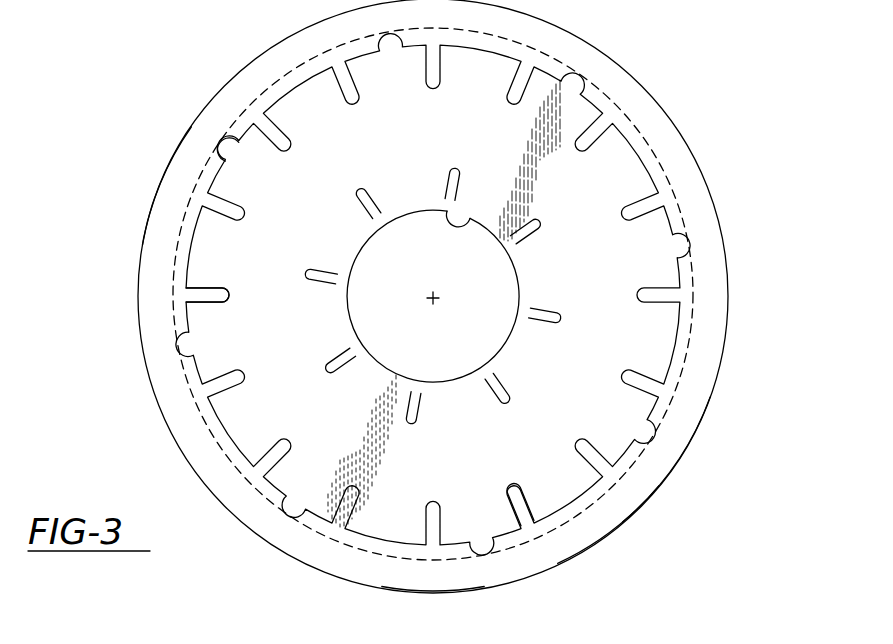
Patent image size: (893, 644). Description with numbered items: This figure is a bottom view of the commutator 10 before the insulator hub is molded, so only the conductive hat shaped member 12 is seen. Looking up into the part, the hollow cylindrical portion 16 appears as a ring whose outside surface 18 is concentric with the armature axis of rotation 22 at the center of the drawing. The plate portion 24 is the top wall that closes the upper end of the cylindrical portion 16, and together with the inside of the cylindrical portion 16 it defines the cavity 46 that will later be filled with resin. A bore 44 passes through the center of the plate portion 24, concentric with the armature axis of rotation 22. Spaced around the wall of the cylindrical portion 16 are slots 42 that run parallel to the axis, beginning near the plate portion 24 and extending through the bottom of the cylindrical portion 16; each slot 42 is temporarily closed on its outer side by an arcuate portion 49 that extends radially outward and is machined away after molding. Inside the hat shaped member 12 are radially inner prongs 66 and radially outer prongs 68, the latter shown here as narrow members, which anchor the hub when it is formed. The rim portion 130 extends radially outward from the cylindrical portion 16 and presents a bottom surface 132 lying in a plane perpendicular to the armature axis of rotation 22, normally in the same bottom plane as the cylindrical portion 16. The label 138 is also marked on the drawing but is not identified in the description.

The commutator 10 is at (205, 84).
The hat shaped member 12 is at (635, 515).
The cylindrical portion 16 is at (228, 421).
The outside surface 18 is at (372, 558).
The armature axis of rotation 22 is at (430, 297).
The plate portion 24 is at (205, 268).
The slot 42 is at (580, 78).
The bore 44 is at (470, 218).
The cavity 46 is at (547, 493).
The arcuate portion 49 is at (208, 152).
The radially inner prong 66 is at (409, 407).
The radially outer prong 68 is at (434, 500).
The rim portion 130 is at (452, 572).
The bottom surface 132 is at (168, 195).
The ring web 138 is at (645, 472).